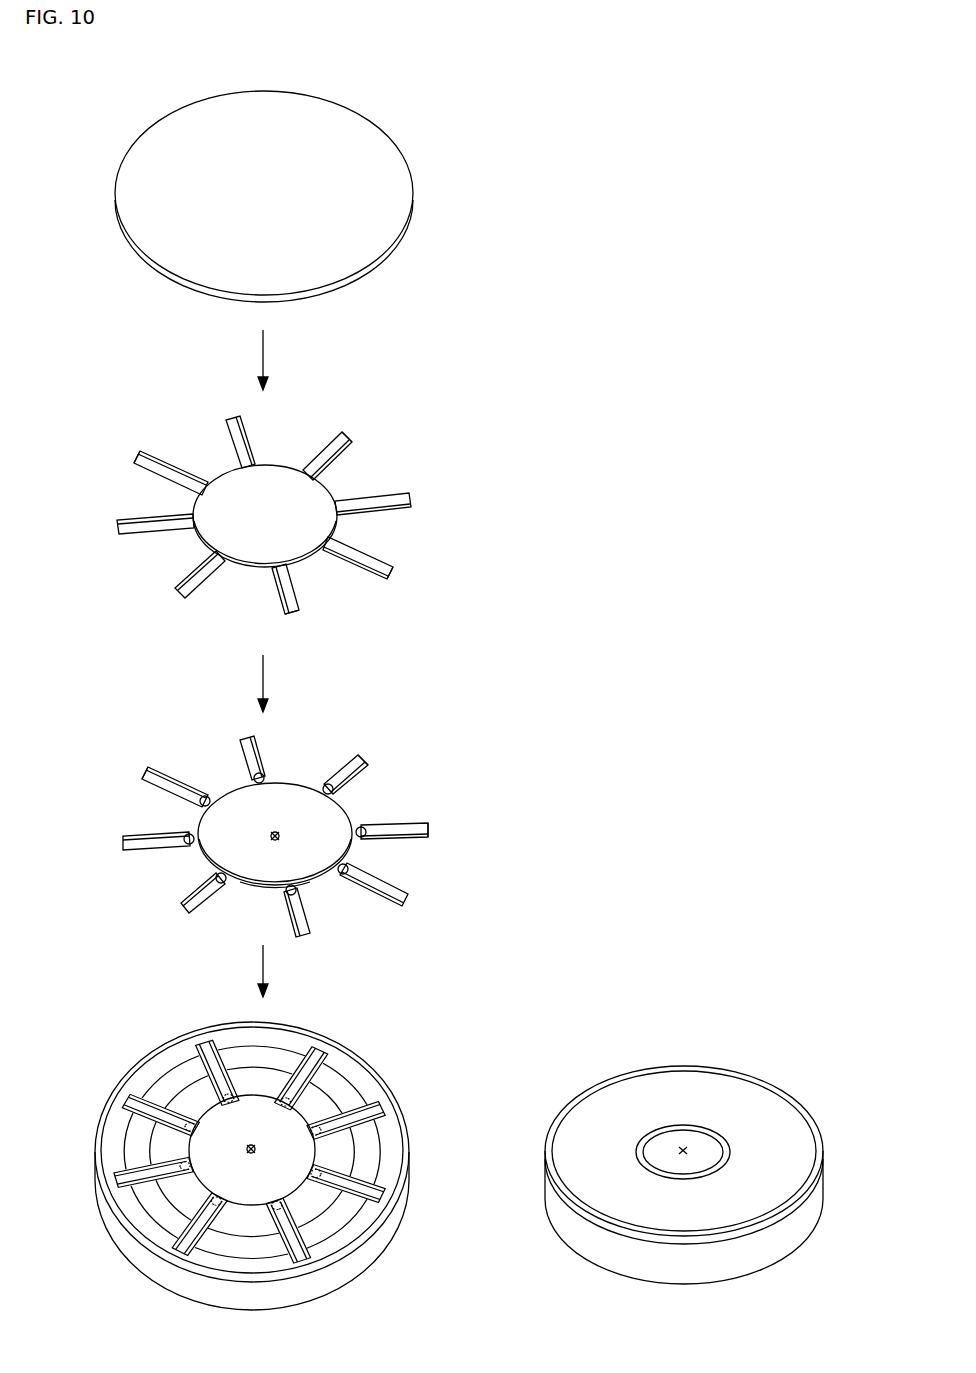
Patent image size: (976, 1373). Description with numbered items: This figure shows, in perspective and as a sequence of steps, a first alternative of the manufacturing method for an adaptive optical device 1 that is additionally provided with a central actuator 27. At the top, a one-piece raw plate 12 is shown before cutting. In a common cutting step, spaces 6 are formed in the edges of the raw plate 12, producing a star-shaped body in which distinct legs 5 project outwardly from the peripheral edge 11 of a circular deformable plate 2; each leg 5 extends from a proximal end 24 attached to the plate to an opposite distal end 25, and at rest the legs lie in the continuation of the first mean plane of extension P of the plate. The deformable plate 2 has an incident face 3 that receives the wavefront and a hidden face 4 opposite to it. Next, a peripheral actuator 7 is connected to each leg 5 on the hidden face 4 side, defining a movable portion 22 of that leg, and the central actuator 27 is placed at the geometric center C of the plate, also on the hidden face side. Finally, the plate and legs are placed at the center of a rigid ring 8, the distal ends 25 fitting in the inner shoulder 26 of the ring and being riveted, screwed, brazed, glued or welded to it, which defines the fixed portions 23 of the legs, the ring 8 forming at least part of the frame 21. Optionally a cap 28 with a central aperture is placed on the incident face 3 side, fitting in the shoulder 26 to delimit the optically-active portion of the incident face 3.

The adaptive optical device 1 is at (108, 1011).
The deformable plate 2 is at (225, 495).
The incident face 3 is at (277, 498).
The hidden face 4 is at (308, 860).
The legs 5 is at (253, 440).
The spaces 6 is at (282, 427).
The peripheral actuators 7 is at (235, 757).
The rigid ring 8 is at (220, 1027).
The peripheral edge 11 is at (190, 500).
The raw plate 12 is at (375, 200).
The frame 21 is at (407, 1153).
The movable portion 22 is at (267, 780).
The fixed portion 23 is at (243, 737).
The proximal end 24 is at (307, 467).
The distal end 25 is at (348, 437).
The inner shoulder 26 is at (120, 1160).
The central actuator 27 is at (270, 838).
The cap 28 is at (773, 1120).
The geometric center C is at (275, 842).
The first mean plane of extension P is at (33, 1323).